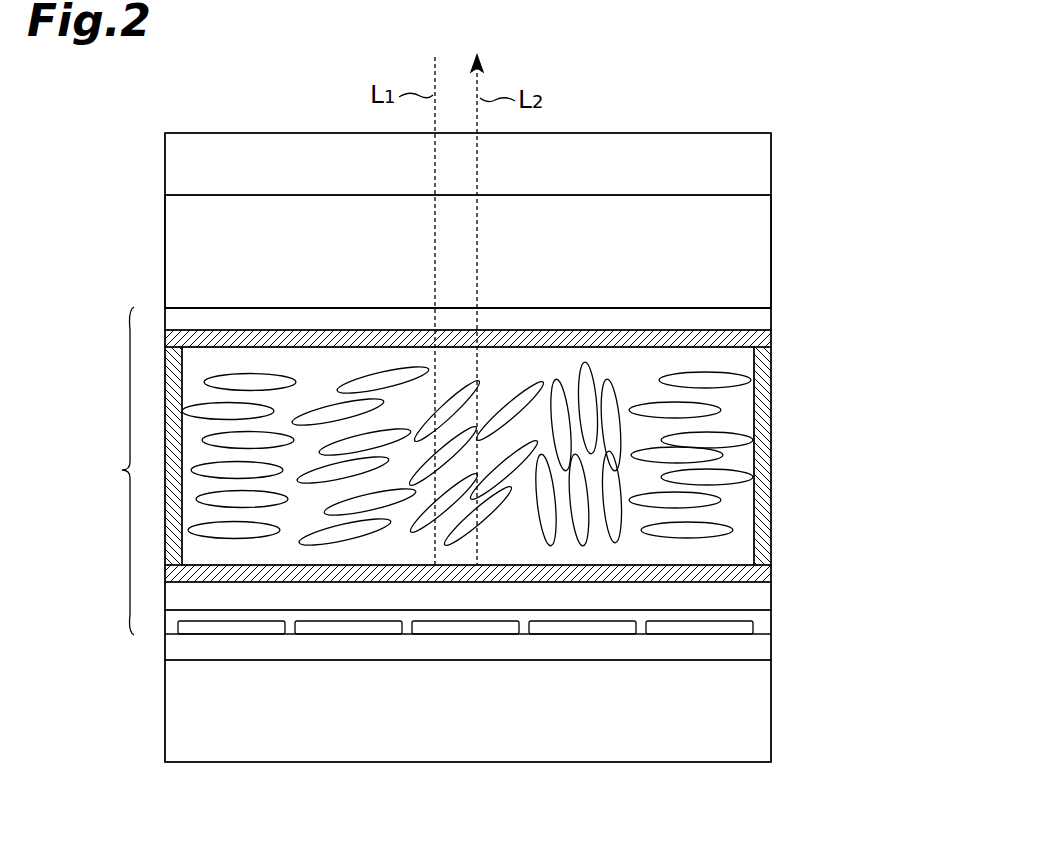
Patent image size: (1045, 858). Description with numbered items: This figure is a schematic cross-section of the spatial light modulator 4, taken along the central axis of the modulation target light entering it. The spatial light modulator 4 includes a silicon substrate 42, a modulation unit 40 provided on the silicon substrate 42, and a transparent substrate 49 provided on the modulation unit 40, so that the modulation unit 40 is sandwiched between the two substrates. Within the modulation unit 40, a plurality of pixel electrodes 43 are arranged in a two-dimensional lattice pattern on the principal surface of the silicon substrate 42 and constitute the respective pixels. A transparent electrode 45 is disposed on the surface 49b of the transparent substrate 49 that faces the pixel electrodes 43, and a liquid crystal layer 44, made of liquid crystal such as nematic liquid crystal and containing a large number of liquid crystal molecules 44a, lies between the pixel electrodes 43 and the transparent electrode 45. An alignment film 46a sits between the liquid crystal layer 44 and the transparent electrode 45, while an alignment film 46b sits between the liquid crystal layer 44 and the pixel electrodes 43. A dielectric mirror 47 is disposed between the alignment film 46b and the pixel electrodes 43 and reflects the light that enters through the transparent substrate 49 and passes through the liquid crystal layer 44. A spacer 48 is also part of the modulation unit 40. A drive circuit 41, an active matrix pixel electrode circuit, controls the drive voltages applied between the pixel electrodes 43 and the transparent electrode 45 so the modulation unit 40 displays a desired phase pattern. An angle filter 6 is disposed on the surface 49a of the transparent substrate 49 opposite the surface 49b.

The spatial light modulator 4 is at (862, 216).
The angle filter 6 is at (652, 133).
The modulation unit 40 is at (111, 471).
The drive circuit 41 is at (168, 655).
The silicon substrate 42 is at (485, 762).
The pixel electrodes 43 is at (233, 634).
The liquid crystal layer 44 is at (745, 412).
The liquid crystal molecules 44a is at (745, 492).
The transparent electrode 45 is at (762, 318).
The alignment film 46a is at (316, 330).
The alignment film 46b is at (545, 575).
The dielectric mirror 47 is at (762, 595).
The spacer 48 is at (765, 357).
The transparent substrate 49 is at (602, 215).
The surface 49a is at (221, 195).
The surface 49b is at (703, 309).